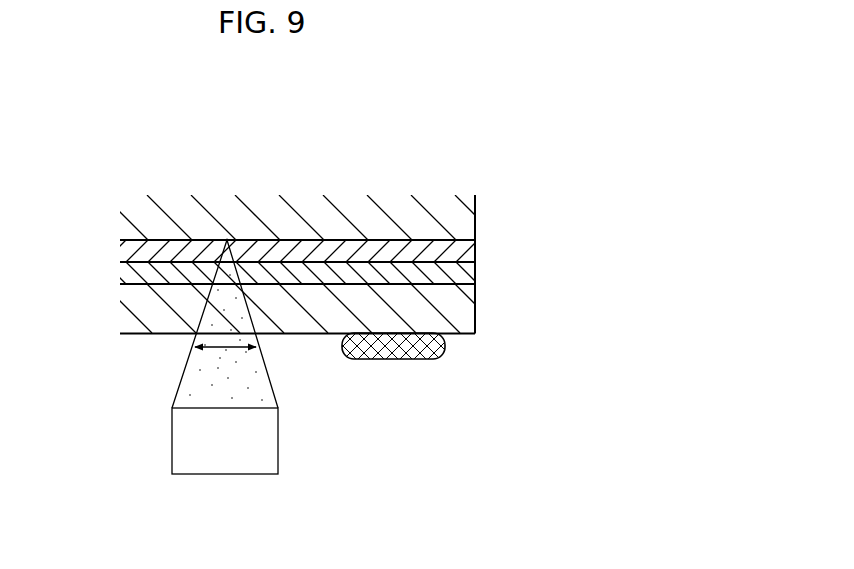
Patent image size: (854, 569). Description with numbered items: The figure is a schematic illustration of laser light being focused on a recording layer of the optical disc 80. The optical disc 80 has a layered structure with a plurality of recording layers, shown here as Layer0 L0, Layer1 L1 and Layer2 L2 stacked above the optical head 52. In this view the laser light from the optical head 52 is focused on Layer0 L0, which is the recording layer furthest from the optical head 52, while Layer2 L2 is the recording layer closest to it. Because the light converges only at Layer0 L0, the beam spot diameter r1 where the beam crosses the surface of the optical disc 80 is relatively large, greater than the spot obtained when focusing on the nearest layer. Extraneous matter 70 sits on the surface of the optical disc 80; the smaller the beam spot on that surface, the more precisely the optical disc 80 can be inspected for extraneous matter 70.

The optical disc 80 is at (272, 226).
The Layer0 L0 is at (150, 243).
The Layer1 L1 is at (142, 265).
The Layer2 L2 is at (152, 285).
The beam spot diameter r1 is at (225, 350).
The optical head 52 is at (278, 440).
The extraneous matter 70 is at (407, 353).